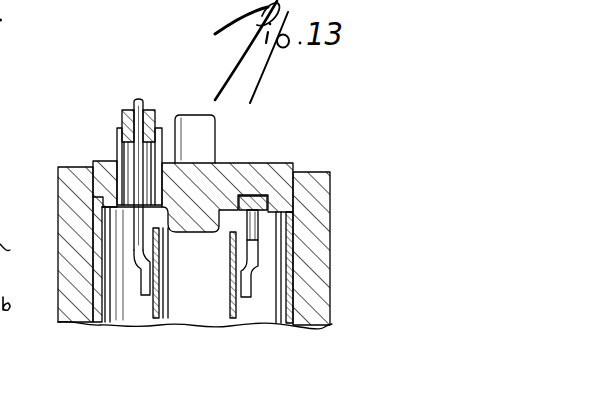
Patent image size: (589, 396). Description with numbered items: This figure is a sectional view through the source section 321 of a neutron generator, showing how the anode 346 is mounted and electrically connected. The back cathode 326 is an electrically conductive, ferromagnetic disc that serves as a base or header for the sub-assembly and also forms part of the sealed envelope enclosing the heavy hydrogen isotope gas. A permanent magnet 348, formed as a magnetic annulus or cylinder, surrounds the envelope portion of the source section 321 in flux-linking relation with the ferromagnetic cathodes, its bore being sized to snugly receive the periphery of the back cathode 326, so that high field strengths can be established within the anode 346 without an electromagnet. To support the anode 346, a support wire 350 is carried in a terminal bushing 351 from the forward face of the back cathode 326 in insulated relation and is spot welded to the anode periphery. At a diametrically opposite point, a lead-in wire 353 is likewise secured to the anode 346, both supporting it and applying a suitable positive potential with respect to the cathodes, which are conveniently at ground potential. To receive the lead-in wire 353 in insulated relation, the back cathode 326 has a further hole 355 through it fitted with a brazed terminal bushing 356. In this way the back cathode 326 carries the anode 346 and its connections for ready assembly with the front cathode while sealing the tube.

The back cathode 326 is at (248, 163).
The permanent magnet 348 is at (331, 173).
The source section 321 is at (296, 228).
The terminal bushing 356 is at (118, 133).
The hole 355 is at (117, 193).
The lead-in wire 353 is at (132, 250).
The anode 346 is at (150, 308).
The terminal bushing 351 is at (250, 226).
The support wire 350 is at (252, 278).